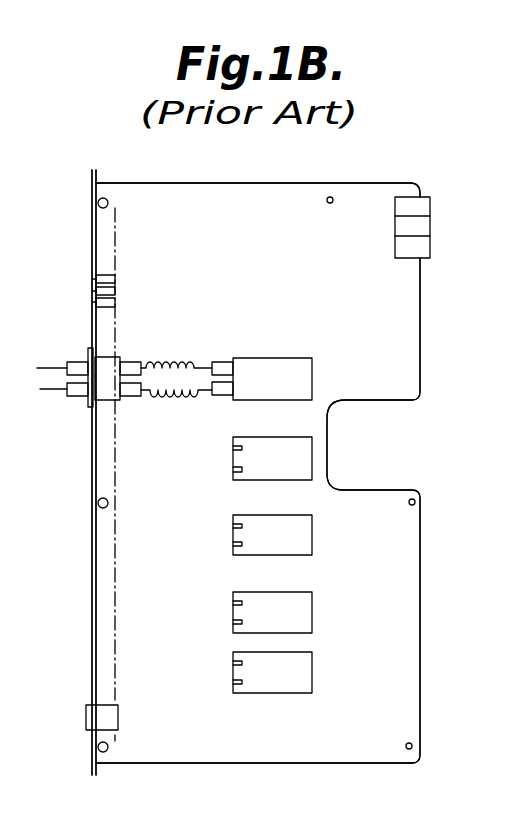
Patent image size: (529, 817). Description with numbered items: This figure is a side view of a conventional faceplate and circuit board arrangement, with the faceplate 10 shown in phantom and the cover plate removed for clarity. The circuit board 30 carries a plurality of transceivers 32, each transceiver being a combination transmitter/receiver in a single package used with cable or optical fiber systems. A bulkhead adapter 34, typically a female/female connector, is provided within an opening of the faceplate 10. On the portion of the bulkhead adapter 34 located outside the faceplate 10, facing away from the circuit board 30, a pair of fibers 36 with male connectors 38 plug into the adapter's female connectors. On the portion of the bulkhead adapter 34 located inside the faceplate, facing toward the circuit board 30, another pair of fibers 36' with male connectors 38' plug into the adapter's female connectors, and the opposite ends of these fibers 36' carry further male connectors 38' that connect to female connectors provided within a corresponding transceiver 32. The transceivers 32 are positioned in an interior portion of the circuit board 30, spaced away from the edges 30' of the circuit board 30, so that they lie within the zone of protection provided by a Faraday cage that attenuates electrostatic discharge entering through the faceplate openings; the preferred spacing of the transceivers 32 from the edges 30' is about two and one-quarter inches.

The faceplate 10 is at (83, 184).
The circuit board 30 is at (263, 451).
The edges of circuit board 30' is at (72, 472).
The transceiver 32 is at (253, 450).
The bulkhead adapter 34 is at (108, 360).
The fibers 36 is at (38, 349).
The fibers 36' is at (181, 354).
The male connectors 38 is at (68, 408).
The male connectors 38' is at (202, 352).